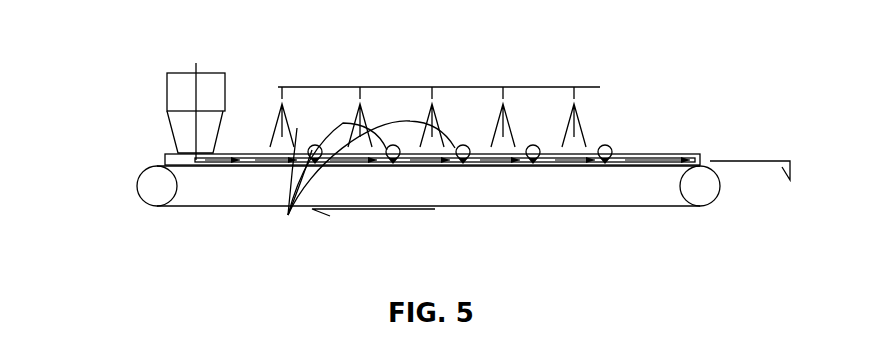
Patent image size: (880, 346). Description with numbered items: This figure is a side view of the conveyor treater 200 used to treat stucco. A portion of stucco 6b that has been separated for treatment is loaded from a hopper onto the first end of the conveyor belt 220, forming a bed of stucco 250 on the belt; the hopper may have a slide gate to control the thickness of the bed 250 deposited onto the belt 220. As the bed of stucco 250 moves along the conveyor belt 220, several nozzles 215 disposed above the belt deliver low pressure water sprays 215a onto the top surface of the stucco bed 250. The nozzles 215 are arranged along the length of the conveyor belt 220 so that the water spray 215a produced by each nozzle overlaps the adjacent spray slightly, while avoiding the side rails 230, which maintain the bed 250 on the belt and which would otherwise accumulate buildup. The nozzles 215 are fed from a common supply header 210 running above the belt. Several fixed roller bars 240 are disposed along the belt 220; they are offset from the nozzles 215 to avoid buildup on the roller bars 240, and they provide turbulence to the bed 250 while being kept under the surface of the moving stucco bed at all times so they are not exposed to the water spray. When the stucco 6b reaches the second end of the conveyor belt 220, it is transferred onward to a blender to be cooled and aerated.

The stucco portion 6b is at (194, 71).
The conveyor treater 200 is at (398, 211).
The conveyor belt 220 is at (220, 174).
The side rails 230 is at (650, 154).
The bed of stucco 250 is at (497, 165).
The nozzle manifold 210 is at (540, 87).
The nozzles 215 is at (432, 93).
The low pressure water sprays 215a is at (357, 184).
The fixed roller bars 240 is at (452, 167).